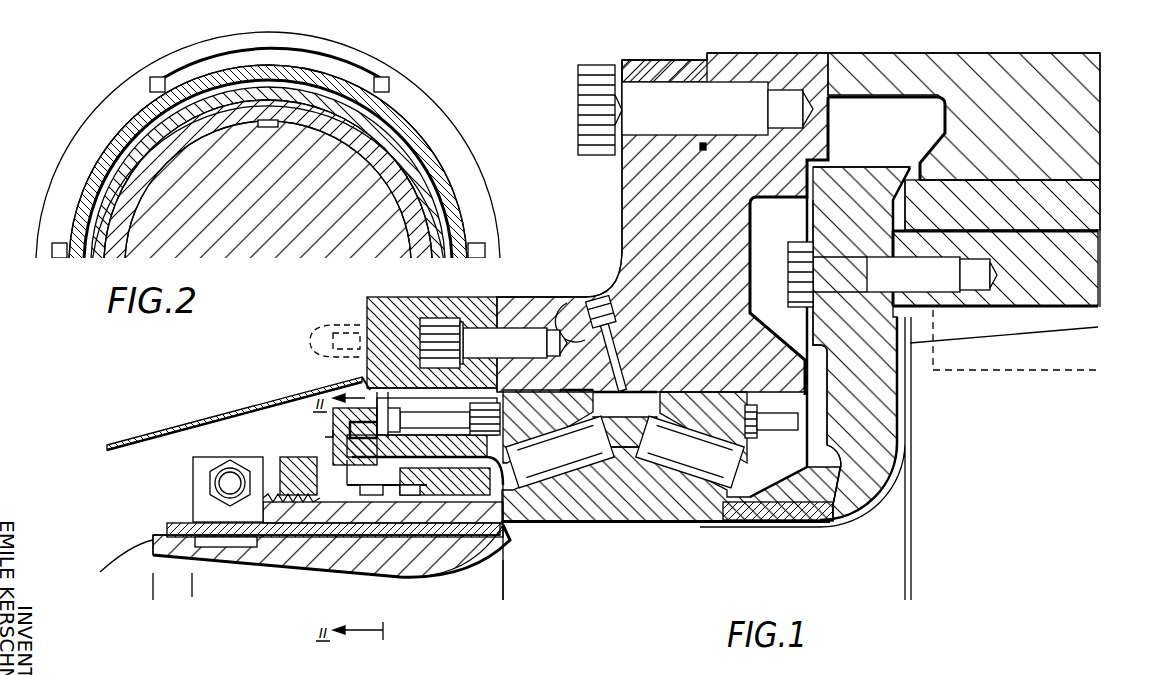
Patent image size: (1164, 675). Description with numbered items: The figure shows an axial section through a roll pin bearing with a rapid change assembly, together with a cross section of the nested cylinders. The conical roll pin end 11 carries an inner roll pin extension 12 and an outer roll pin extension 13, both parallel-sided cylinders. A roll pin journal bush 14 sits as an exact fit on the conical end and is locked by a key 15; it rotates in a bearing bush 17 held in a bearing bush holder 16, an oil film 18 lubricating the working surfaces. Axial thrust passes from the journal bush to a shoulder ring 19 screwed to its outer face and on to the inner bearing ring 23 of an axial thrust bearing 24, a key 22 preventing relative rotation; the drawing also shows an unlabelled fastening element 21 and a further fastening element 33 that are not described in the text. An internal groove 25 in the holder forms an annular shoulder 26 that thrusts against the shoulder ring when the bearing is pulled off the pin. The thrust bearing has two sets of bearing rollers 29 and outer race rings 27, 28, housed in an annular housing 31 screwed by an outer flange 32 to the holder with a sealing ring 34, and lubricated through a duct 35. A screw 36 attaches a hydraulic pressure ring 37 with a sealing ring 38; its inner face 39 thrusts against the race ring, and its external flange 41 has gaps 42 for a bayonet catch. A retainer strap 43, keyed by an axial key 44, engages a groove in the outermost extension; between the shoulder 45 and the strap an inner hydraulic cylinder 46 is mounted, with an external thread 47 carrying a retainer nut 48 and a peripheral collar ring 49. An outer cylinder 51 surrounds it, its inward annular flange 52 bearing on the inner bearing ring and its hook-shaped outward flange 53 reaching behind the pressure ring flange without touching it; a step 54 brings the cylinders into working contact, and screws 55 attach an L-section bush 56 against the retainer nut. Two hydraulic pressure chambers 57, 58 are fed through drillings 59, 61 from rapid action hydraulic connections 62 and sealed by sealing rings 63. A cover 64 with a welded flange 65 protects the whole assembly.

In FIG. 1, the conical roll pin end 11 is at (983, 504).
In FIG. 1, the inner roll pin extension 12 is at (702, 584).
In FIG. 2, the outer roll pin extension 13 is at (258, 232).
In FIG. 1, the outer roll pin extension 13 is at (268, 575).
In FIG. 1, the roll pin journal bush 14 is at (1090, 280).
In FIG. 1, the key 15 is at (1090, 327).
In FIG. 1, the bearing bush holder 16 is at (1092, 138).
In FIG. 1, the bearing bush 17 is at (1090, 200).
In FIG. 1, the oil film 18 is at (1098, 230).
In FIG. 1, the shoulder ring 19 is at (893, 412).
In FIG. 1, the bolt 21 is at (935, 285).
In FIG. 1, the key 22 is at (812, 522).
In FIG. 1, the inner bearing ring 23 is at (622, 512).
In FIG. 1, the axial thrust bearing 24 is at (591, 537).
In FIG. 1, the internal groove 25 is at (882, 100).
In FIG. 1, the annular shoulder 26 is at (910, 165).
In FIG. 1, the outer race ring 27 is at (558, 407).
In FIG. 1, the outer race ring 28 is at (690, 410).
In FIG. 1, the bearing rollers 29 is at (548, 467).
In FIG. 1, the annular housing 31 is at (640, 232).
In FIG. 1, the outer flange 32 is at (660, 62).
In FIG. 1, the bolt 33 is at (740, 100).
In FIG. 1, the sealing ring 34 is at (700, 148).
In FIG. 1, the duct 35 is at (567, 303).
In FIG. 1, the screw 36 is at (505, 340).
In FIG. 2, the hydraulic pressure ring 37 is at (405, 118).
In FIG. 1, the hydraulic pressure ring 37 is at (440, 365).
In FIG. 1, the sealing ring 38 is at (470, 355).
In FIG. 1, the inner face 39 is at (522, 522).
In FIG. 2, the external flange 41 is at (380, 85).
In FIG. 1, the external flange 41 is at (356, 392).
In FIG. 2, the gaps 42 is at (330, 60).
In FIG. 1, the retainer strap 43 is at (198, 500).
In FIG. 2, the axial key 44 is at (268, 120).
In FIG. 1, the axial key 44 is at (504, 560).
In FIG. 1, the shoulder 45 is at (440, 500).
In FIG. 2, the inner hydraulic cylinder 46 is at (230, 118).
In FIG. 1, the inner hydraulic cylinder 46 is at (385, 500).
In FIG. 1, the external thread 47 is at (268, 495).
In FIG. 1, the retainer nut 48 is at (300, 458).
In FIG. 1, the peripheral collar ring 49 is at (397, 500).
In FIG. 2, the outer cylinder 51 is at (150, 135).
In FIG. 1, the outer cylinder 51 is at (478, 500).
In FIG. 1, the inward annular flange 52 is at (513, 535).
In FIG. 2, the outward flange 53 is at (138, 88).
In FIG. 1, the outward flange 53 is at (330, 430).
In FIG. 1, the step 54 is at (425, 497).
In FIG. 1, the screws 55 is at (345, 500).
In FIG. 1, the L-section bush 56 is at (335, 500).
In FIG. 1, the hydraulic pressure chamber 57 is at (370, 500).
In FIG. 1, the hydraulic pressure chamber 58 is at (410, 500).
In FIG. 1, the drilling 59 is at (355, 500).
In FIG. 1, the drilling 61 is at (450, 425).
In FIG. 1, the rapid action hydraulic connections 62 is at (300, 397).
In FIG. 1, the sealing rings 63 is at (372, 463).
In FIG. 1, the cover 64 is at (150, 445).
In FIG. 1, the welded flange 65 is at (372, 315).